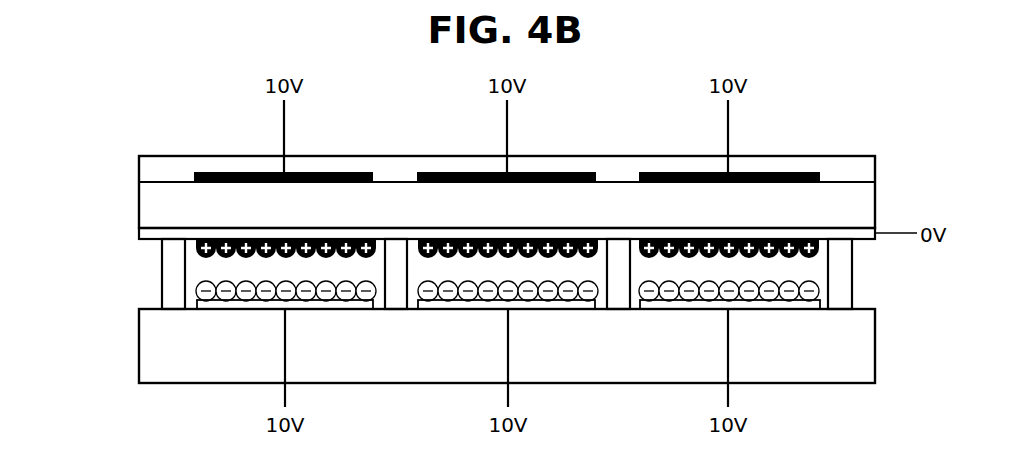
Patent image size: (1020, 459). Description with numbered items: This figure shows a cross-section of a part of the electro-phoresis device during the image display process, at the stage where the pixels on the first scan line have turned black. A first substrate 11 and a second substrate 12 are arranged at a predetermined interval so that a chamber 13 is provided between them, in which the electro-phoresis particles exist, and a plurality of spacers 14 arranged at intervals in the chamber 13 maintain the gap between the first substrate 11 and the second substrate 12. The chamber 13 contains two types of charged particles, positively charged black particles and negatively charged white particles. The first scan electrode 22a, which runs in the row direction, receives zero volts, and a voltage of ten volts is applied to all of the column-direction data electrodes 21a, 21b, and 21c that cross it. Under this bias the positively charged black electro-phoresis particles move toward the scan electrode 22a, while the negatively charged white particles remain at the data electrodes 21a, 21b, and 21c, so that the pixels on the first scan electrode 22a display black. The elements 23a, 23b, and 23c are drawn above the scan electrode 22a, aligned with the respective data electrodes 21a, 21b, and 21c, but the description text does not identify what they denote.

The first substrate 11 is at (863, 343).
The second substrate 12 is at (867, 209).
The chamber 13 is at (198, 271).
The spacers 14 is at (167, 287).
The data electrode 21a is at (220, 302).
The data electrode 21b is at (443, 302).
The data electrode 21c is at (660, 302).
The scan electrode 22a is at (150, 235).
The first upper electrode 23a is at (238, 170).
The second upper electrode 23b is at (460, 170).
The third upper electrode 23c is at (682, 170).